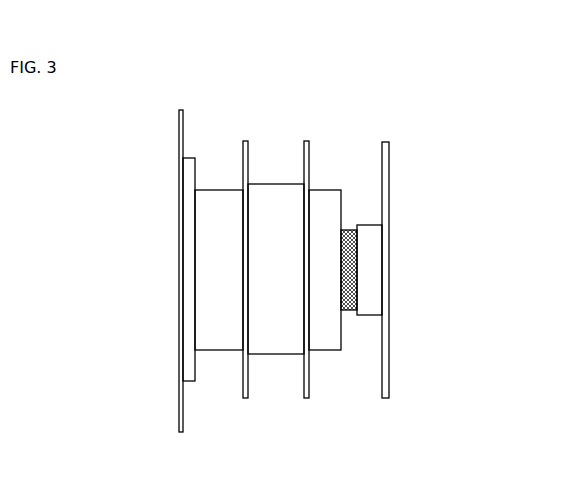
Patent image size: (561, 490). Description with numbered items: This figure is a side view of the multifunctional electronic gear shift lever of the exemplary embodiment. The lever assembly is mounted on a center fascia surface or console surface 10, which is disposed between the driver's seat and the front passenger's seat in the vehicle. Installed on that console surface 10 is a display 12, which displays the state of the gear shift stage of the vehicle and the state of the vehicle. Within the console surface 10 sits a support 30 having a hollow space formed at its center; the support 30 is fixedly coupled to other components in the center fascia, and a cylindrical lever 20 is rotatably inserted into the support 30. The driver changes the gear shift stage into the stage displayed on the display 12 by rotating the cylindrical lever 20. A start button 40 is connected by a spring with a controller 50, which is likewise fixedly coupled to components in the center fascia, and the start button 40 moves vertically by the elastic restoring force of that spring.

The console surface 10 is at (182, 128).
The display 12 is at (187, 208).
The cylindrical lever 20 is at (220, 338).
The support 30 is at (276, 340).
The start button 40 is at (355, 313).
The controller 50 is at (385, 336).